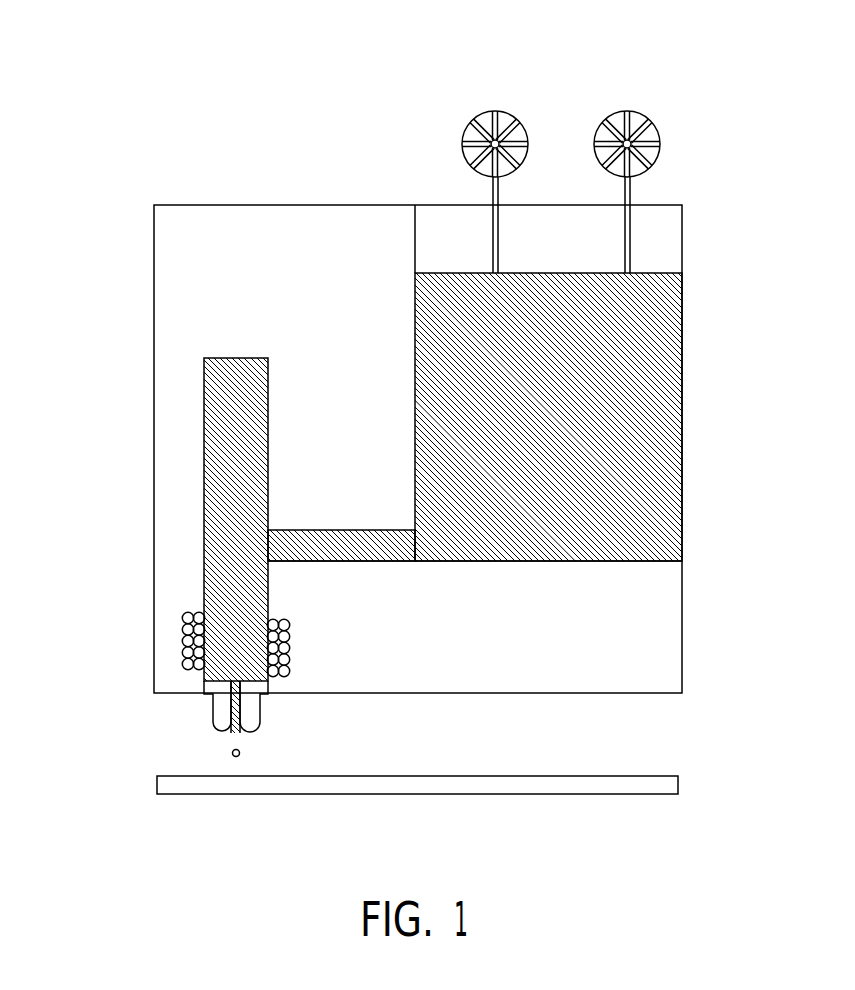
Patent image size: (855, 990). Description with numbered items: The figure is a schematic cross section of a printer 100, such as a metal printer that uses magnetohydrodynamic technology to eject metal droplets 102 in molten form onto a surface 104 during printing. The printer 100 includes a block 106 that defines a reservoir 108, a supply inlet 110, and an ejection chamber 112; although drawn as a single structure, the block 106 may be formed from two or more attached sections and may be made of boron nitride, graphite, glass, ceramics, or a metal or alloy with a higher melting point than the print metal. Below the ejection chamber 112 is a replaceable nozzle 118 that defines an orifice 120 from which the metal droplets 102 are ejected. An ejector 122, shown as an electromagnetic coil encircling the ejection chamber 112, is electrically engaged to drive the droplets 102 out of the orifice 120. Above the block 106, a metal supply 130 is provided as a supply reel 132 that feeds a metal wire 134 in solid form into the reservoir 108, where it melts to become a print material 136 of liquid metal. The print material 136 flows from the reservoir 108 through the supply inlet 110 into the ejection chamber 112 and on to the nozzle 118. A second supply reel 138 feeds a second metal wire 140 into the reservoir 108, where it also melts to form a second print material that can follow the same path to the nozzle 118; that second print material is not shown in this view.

The printer 100 is at (128, 152).
The metal droplets 102 is at (242, 752).
The surface 104 is at (682, 783).
The block 106 is at (170, 296).
The reservoir 108 is at (697, 207).
The supply inlet 110 is at (360, 545).
The ejection chamber 112 is at (203, 498).
The nozzle 118 is at (227, 710).
The orifice 120 is at (221, 740).
The ejector 122 is at (181, 618).
The metal supply 130 is at (576, 79).
The supply reel 132 is at (650, 133).
The metal wire 134 is at (632, 196).
The print material 136 is at (488, 548).
The second supply reel 138 is at (518, 133).
The second metal wire 140 is at (498, 196).